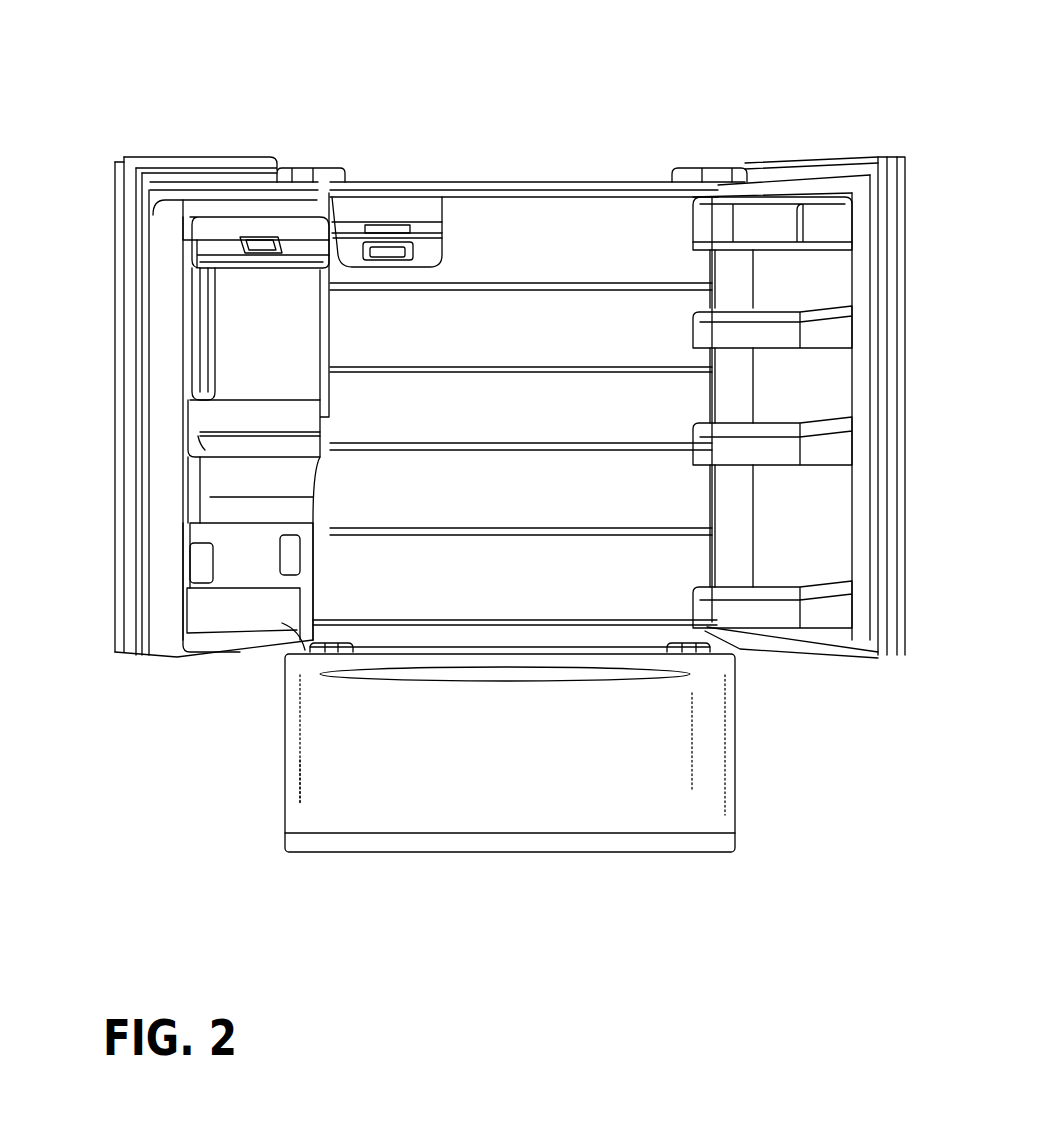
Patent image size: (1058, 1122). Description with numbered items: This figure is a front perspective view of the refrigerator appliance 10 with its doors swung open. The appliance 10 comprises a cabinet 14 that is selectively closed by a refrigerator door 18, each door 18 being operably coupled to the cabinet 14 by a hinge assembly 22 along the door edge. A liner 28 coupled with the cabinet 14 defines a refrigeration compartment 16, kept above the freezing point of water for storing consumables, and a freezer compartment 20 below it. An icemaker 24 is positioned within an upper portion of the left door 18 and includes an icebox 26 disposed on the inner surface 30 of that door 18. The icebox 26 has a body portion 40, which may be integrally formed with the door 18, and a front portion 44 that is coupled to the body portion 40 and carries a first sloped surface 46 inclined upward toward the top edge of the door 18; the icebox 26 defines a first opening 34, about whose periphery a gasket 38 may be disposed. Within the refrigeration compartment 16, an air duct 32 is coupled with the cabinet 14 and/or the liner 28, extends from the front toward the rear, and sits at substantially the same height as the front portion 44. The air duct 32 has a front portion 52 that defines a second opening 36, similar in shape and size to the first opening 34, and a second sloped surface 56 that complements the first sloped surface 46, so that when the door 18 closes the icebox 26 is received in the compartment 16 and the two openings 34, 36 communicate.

The refrigerator appliance 10 is at (213, 86).
The cabinet 14 is at (538, 180).
The refrigeration compartment 16 is at (403, 588).
The refrigerator door 18 is at (108, 296).
The freezer compartment 20 is at (363, 765).
The hinge assembly 22 is at (322, 172).
The icemaker 24 is at (196, 352).
The icebox 26 is at (235, 382).
The liner 28 is at (597, 248).
The inner surface 30 is at (265, 480).
The air duct 32 is at (385, 212).
The first opening 34 is at (253, 238).
The second opening 36 is at (417, 248).
The gasket 38 is at (177, 235).
The body portion 40 is at (270, 398).
The front portion 44 is at (262, 250).
The first sloped surface 46 is at (217, 236).
The front portion 52 is at (430, 258).
The second sloped surface 56 is at (352, 255).